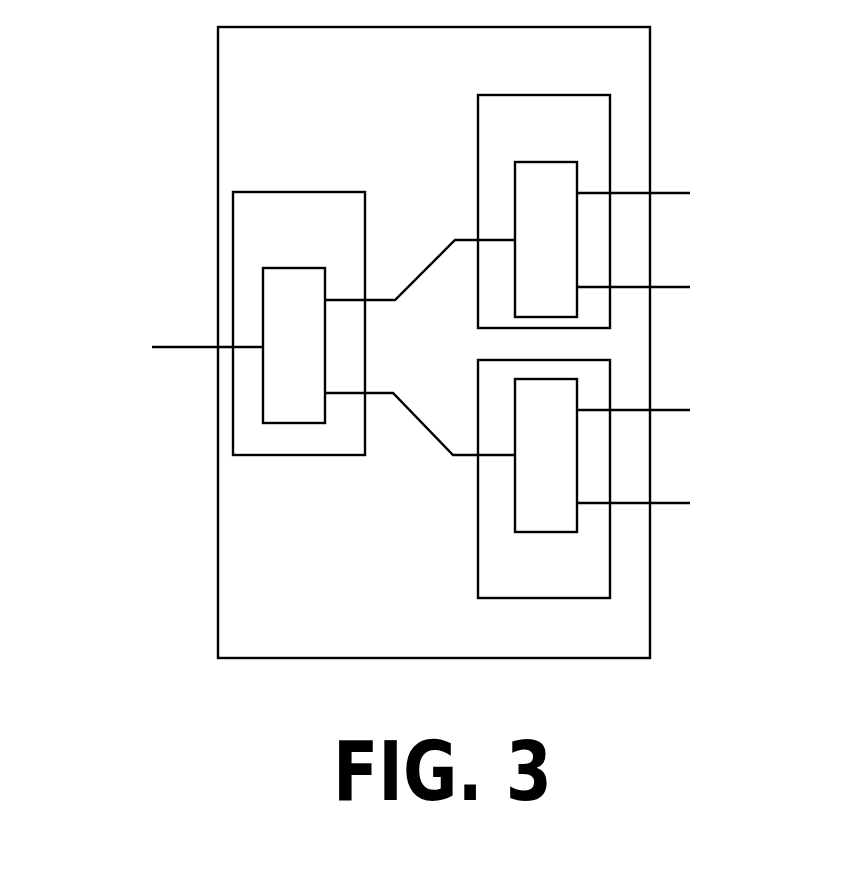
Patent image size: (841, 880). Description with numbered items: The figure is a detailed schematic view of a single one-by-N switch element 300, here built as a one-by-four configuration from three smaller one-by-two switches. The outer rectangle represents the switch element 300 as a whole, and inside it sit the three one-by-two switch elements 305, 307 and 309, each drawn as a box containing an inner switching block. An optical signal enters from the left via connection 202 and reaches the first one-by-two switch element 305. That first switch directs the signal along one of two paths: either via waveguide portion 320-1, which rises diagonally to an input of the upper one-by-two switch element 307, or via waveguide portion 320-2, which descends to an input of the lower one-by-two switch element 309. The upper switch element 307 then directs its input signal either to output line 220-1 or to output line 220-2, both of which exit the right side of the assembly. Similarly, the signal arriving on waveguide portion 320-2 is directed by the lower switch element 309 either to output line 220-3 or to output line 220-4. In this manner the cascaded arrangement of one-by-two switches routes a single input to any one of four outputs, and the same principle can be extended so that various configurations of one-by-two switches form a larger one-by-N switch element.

The 1×N switch element 300 is at (302, 82).
The 1×2 switch element 305 is at (333, 243).
The 1×2 switch element 307 is at (580, 152).
The 1×2 switch element 309 is at (580, 590).
The connection 202 is at (182, 345).
The waveguide portion 320-1 is at (448, 238).
The waveguide portion 320-2 is at (445, 452).
The output line 220-1 is at (680, 193).
The output line 220-2 is at (678, 287).
The output line 220-3 is at (678, 410).
The output line 220-4 is at (678, 503).